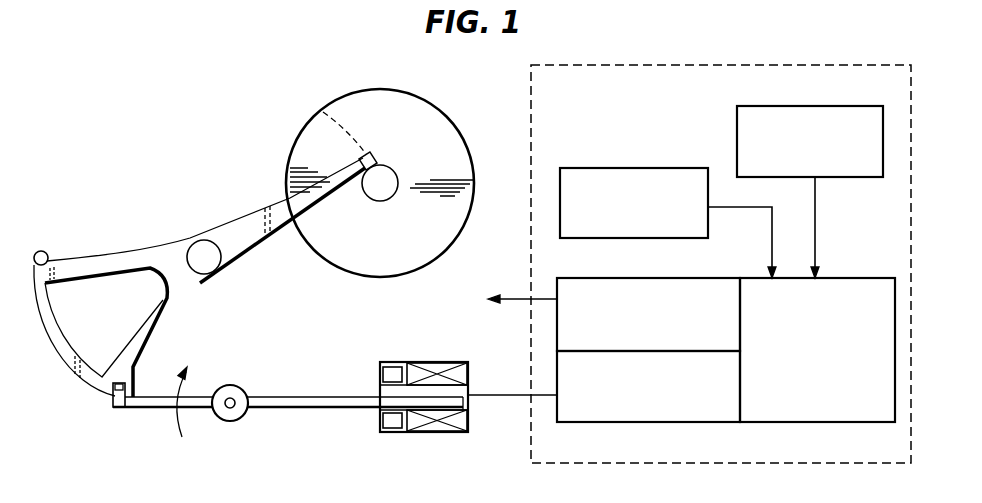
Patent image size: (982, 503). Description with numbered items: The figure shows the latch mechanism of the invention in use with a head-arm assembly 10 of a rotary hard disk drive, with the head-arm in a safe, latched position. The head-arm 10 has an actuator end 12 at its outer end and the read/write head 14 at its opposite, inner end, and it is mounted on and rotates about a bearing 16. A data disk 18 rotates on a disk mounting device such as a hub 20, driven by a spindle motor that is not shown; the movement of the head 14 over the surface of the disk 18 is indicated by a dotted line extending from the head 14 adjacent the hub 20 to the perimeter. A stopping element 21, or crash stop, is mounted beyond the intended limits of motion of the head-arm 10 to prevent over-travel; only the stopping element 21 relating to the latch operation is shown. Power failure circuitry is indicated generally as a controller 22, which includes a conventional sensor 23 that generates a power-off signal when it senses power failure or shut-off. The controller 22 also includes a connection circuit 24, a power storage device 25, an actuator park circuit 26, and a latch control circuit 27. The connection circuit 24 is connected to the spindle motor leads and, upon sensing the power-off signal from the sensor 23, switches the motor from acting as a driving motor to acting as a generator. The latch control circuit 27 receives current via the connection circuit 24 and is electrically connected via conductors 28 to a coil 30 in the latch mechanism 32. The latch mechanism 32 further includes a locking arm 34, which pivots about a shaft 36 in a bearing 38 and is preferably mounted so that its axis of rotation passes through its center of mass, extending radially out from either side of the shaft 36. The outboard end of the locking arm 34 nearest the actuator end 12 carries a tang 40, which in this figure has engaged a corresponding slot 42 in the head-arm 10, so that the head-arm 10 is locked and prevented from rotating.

The head-arm assembly 10 is at (242, 188).
The actuator end 12 is at (106, 250).
The read/write head 14 is at (376, 156).
The bearing 16 is at (200, 254).
The data disk 18 is at (365, 88).
The hub 20 is at (373, 190).
The stopping element 21 is at (41, 250).
The controller 22 is at (722, 65).
The sensor 23 is at (836, 106).
The connection circuit 24 is at (846, 278).
The power storage device 25 is at (661, 168).
The actuator park circuit 26 is at (652, 278).
The latch control circuit 27 is at (652, 422).
The conductors 28 is at (500, 393).
The coil 30 is at (420, 362).
The latch mechanism 32 is at (389, 352).
The locking arm 34 is at (287, 409).
The shaft 36 is at (230, 421).
The bearing 38 is at (231, 386).
The tang 40 is at (104, 380).
The slot 42 is at (124, 404).